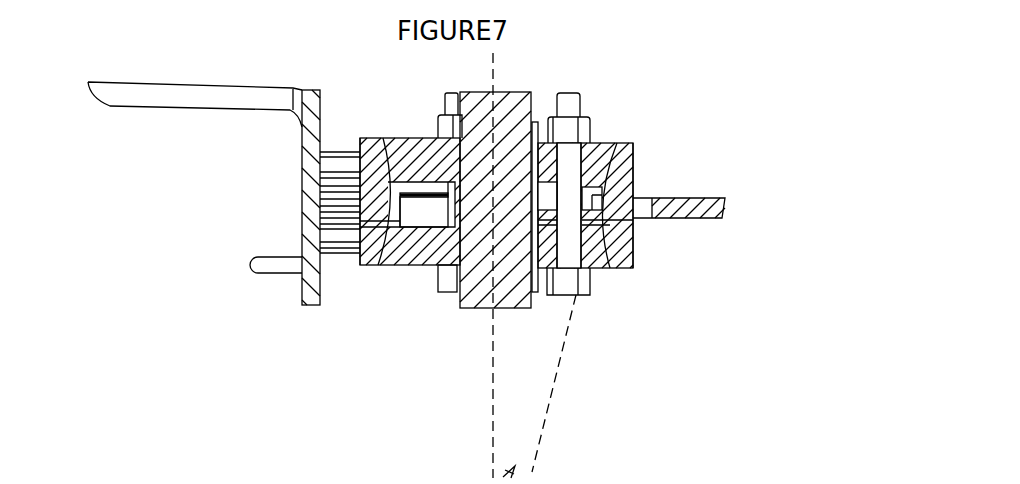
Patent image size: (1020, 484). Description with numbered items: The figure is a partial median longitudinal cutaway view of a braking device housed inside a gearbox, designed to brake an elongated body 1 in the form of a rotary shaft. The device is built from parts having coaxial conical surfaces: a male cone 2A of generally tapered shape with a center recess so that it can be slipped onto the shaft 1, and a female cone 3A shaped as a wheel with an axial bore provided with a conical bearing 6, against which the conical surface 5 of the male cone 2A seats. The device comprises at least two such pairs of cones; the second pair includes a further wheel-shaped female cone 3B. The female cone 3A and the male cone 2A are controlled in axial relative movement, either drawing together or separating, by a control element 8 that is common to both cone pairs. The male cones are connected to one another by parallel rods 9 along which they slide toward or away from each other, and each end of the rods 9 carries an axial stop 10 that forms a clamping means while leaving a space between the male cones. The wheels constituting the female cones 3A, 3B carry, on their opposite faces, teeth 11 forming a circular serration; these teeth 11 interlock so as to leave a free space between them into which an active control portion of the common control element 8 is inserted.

The elongated body 1 is at (515, 308).
The male cone 2A is at (598, 268).
The female cone 3A is at (602, 270).
The female cone 3B is at (633, 143).
The conical surface 5 is at (383, 257).
The conical bearing 6 is at (380, 263).
The control element 8 is at (725, 216).
The parallel rods 9 is at (578, 93).
The axial stop 10 is at (583, 118).
The teeth 11 is at (430, 207).